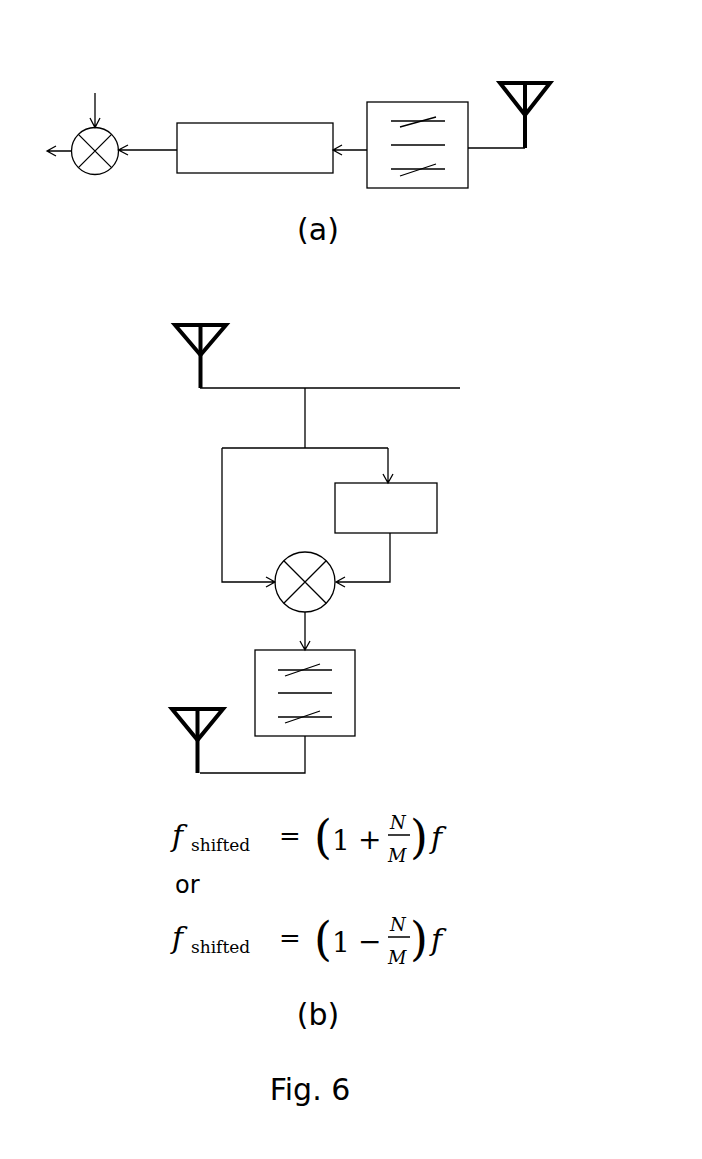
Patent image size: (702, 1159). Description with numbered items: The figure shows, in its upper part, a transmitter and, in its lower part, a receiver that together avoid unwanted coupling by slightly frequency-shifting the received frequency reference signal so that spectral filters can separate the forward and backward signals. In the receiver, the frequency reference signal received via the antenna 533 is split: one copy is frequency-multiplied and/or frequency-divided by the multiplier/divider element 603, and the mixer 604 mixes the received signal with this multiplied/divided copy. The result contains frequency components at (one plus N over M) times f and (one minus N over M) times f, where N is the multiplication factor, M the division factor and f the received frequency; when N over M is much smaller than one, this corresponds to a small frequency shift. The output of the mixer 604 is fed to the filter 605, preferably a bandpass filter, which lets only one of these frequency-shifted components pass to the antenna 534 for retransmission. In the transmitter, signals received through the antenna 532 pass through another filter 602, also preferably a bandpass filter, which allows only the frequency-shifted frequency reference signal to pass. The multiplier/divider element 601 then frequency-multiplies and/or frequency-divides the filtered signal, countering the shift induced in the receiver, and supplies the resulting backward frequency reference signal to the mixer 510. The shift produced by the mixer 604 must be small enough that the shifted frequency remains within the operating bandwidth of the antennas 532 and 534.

The mixer 510 is at (95, 175).
The multiplier/divider element 601 is at (257, 123).
The filter 602 is at (402, 102).
The antenna 532 is at (537, 83).
The antenna 533 is at (210, 325).
The multiplier/divider element 603 is at (415, 533).
The mixer 604 is at (305, 551).
The filter 605 is at (355, 676).
The antenna 534 is at (210, 709).